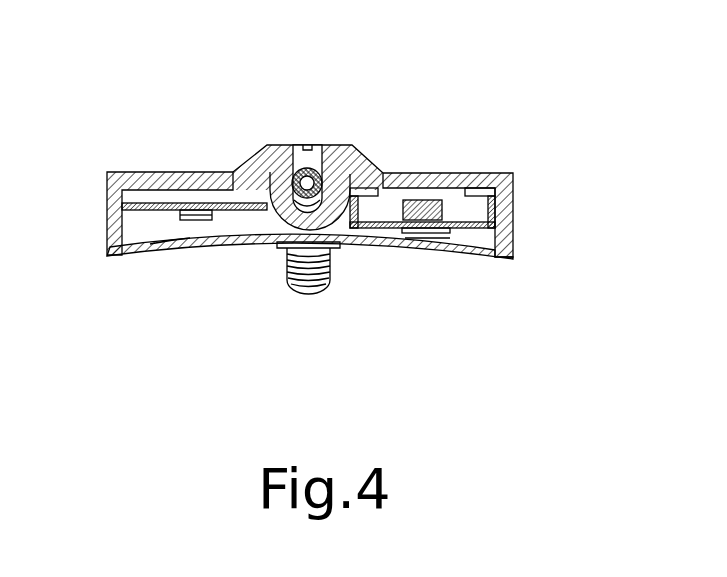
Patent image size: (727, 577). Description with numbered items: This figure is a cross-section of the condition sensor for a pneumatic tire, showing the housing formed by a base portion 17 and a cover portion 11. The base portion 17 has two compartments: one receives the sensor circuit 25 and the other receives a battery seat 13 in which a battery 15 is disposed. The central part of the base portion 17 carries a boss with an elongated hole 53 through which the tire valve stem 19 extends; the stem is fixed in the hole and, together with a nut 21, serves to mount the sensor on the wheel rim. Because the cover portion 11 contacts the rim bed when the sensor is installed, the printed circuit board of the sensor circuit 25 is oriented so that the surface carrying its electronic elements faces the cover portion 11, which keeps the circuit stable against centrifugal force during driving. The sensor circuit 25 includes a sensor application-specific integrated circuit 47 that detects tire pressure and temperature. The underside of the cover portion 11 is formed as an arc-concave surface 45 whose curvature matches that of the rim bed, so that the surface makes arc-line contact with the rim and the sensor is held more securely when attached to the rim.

The cover portion 11 is at (440, 248).
The battery seat 13 is at (447, 240).
The battery 15 is at (422, 202).
The base portion 17 is at (487, 174).
The tire valve stem 19 is at (290, 277).
The nut 21 is at (333, 248).
The sensor circuit 25 is at (172, 203).
The arc-concave surface 45 is at (170, 248).
The sensor application-specific integrated circuit 47 is at (193, 220).
The elongated hole 53 is at (307, 148).